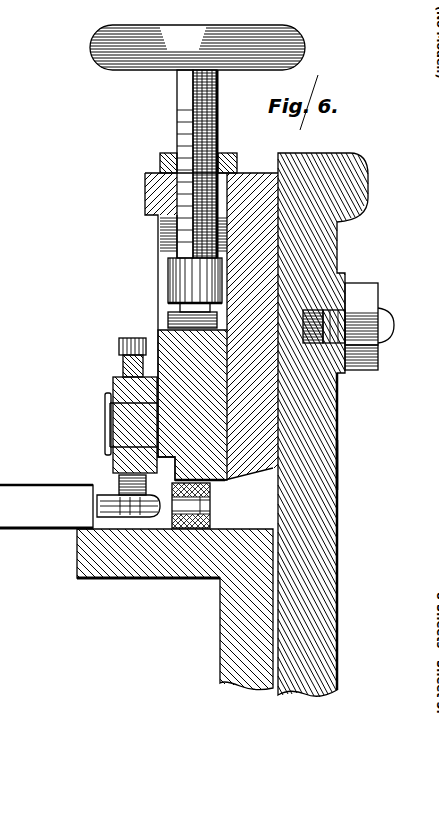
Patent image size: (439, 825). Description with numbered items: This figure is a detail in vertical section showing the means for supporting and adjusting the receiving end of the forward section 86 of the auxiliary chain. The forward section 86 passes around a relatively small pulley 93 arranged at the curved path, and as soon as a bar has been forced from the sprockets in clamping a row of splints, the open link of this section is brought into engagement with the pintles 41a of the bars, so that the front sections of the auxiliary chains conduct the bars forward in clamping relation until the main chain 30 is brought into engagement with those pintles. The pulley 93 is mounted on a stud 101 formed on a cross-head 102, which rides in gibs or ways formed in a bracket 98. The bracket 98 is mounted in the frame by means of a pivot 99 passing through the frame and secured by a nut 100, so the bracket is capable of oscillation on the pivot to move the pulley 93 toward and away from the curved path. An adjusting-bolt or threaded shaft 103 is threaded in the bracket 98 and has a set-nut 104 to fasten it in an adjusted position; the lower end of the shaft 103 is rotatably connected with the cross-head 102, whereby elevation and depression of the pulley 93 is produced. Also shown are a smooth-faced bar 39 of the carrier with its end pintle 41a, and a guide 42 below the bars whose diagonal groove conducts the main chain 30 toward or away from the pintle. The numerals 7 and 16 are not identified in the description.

The adjusting-bolt or threaded shaft 103 is at (177, 100).
The set-nut 104 is at (230, 164).
The bracket 98 is at (265, 231).
The pivot 99 is at (393, 322).
The nut 100 is at (373, 372).
The frame 7 is at (333, 463).
The forward section of the auxiliary chain 86 is at (133, 337).
The pulley 93 is at (127, 388).
The stud 101 is at (117, 413).
The cross-head 102 is at (182, 427).
The bar 39 is at (46, 506).
The pintle 41a is at (112, 520).
The guide 42 is at (173, 580).
The main chain 30 is at (210, 516).
The rod 16 is at (10, 335).